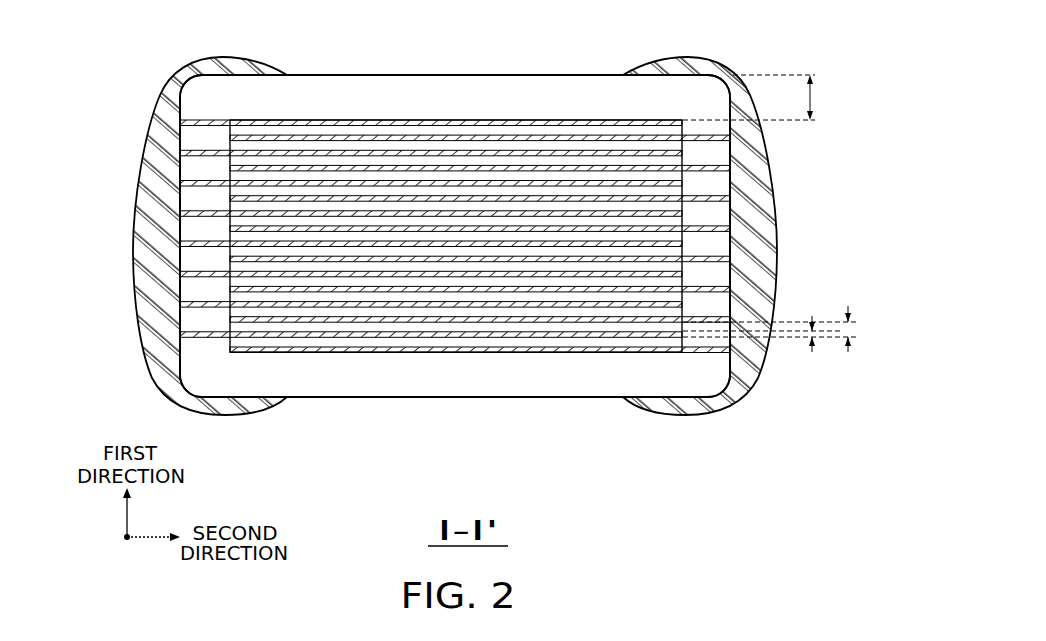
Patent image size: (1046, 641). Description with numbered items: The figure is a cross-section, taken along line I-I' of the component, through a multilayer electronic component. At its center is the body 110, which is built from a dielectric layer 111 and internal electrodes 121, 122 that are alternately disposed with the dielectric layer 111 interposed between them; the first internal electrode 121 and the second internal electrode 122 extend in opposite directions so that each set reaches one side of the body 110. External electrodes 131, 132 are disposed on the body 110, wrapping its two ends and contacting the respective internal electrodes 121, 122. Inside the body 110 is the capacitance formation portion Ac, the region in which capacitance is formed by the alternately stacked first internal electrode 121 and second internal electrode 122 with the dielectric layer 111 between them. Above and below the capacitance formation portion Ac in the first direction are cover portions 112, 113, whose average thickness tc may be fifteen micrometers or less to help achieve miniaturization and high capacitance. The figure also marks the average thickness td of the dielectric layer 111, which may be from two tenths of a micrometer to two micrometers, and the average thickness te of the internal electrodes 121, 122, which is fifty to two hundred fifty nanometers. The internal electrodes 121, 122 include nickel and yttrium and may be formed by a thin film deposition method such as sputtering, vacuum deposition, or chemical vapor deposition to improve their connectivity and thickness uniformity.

The body 110 is at (400, 77).
The dielectric layer 111 is at (345, 145).
The cover portion 112 is at (458, 87).
The cover portion 113 is at (425, 390).
The first internal electrode 121 is at (528, 122).
The second internal electrode 122 is at (548, 138).
The external electrode 131 is at (137, 213).
The external electrode 132 is at (780, 213).
The capacitance formation portion Ac is at (510, 352).
The average thickness of the cover portions tc is at (759, 97).
The average thickness of the dielectric layer td is at (775, 329).
The average thickness of the internal electrodes te is at (761, 334).